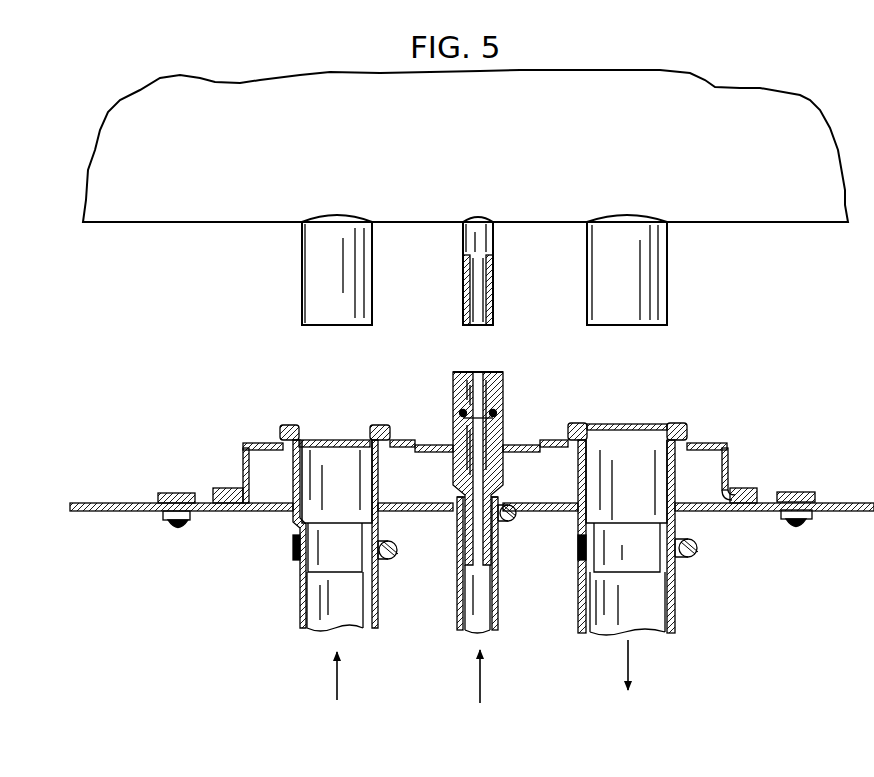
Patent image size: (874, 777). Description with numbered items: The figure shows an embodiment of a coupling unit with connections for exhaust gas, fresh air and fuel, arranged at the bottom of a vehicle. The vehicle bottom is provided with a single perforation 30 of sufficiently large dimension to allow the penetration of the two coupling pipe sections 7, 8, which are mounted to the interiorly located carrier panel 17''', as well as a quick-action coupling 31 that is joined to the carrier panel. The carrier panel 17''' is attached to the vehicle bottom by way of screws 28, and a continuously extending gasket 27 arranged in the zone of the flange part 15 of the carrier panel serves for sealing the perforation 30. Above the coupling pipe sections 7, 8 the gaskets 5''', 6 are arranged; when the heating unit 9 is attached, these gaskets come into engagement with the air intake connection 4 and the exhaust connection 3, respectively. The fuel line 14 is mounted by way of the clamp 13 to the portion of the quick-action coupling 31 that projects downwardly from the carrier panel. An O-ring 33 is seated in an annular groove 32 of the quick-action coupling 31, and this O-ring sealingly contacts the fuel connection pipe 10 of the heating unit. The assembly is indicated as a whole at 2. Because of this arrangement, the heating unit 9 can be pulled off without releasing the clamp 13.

The heating unit 9 is at (472, 137).
The air intake connection 4 is at (318, 284).
The fuel connection pipe 10 is at (463, 284).
The exhaust connection 3 is at (653, 283).
The flange part 15 is at (152, 501).
The screws 28 is at (172, 514).
The gasket 27 is at (236, 506).
The carrier panel 17''' is at (318, 445).
The gasket 5''' is at (326, 414).
The gasket 6 is at (673, 424).
The connecting bracket assembly 2 is at (482, 481).
The perforation 30 is at (683, 505).
The coupling pipe section 8 is at (293, 515).
The quick-action coupling 31 is at (508, 372).
The annular groove 32 is at (496, 413).
The O-ring 33 is at (460, 413).
The fuel line 14 is at (498, 612).
The clamp 13 is at (514, 522).
The coupling pipe section 7 is at (578, 515).